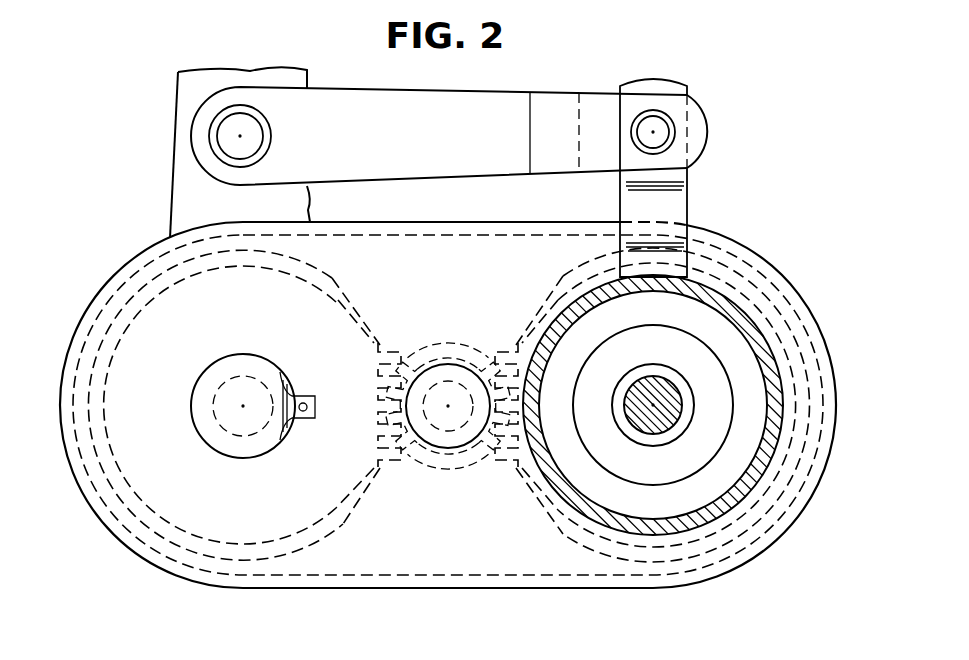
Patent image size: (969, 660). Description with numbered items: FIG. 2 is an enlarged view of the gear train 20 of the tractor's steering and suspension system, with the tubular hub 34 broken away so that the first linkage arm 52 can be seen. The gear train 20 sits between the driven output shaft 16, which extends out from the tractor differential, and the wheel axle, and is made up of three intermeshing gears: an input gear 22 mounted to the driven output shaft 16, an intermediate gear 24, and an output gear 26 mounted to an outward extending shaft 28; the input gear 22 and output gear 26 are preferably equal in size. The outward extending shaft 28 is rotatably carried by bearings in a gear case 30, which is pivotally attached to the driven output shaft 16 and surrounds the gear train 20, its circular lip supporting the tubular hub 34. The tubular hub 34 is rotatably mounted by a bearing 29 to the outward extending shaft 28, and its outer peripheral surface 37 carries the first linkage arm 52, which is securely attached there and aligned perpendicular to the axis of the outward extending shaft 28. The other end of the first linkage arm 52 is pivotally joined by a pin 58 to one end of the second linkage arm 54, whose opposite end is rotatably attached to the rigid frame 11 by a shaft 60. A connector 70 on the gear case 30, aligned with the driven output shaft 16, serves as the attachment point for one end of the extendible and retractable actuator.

The rigid frame 11 is at (195, 189).
The driven output shaft 16 is at (231, 380).
The gear train 20 is at (413, 582).
The input gear 22 is at (380, 343).
The intermediate gear 24 is at (420, 350).
The output gear 26 is at (516, 343).
The outward extending shaft 28 is at (647, 418).
The bearing 29 is at (653, 366).
The gear case 30 is at (578, 590).
The tubular hub 34 is at (790, 471).
The outer peripheral surface 37 is at (770, 370).
The first linkage arm 52 is at (680, 204).
The second linkage arm 54 is at (458, 93).
The pin 58 is at (662, 128).
The shaft 60 is at (245, 124).
The connector 70 is at (246, 460).